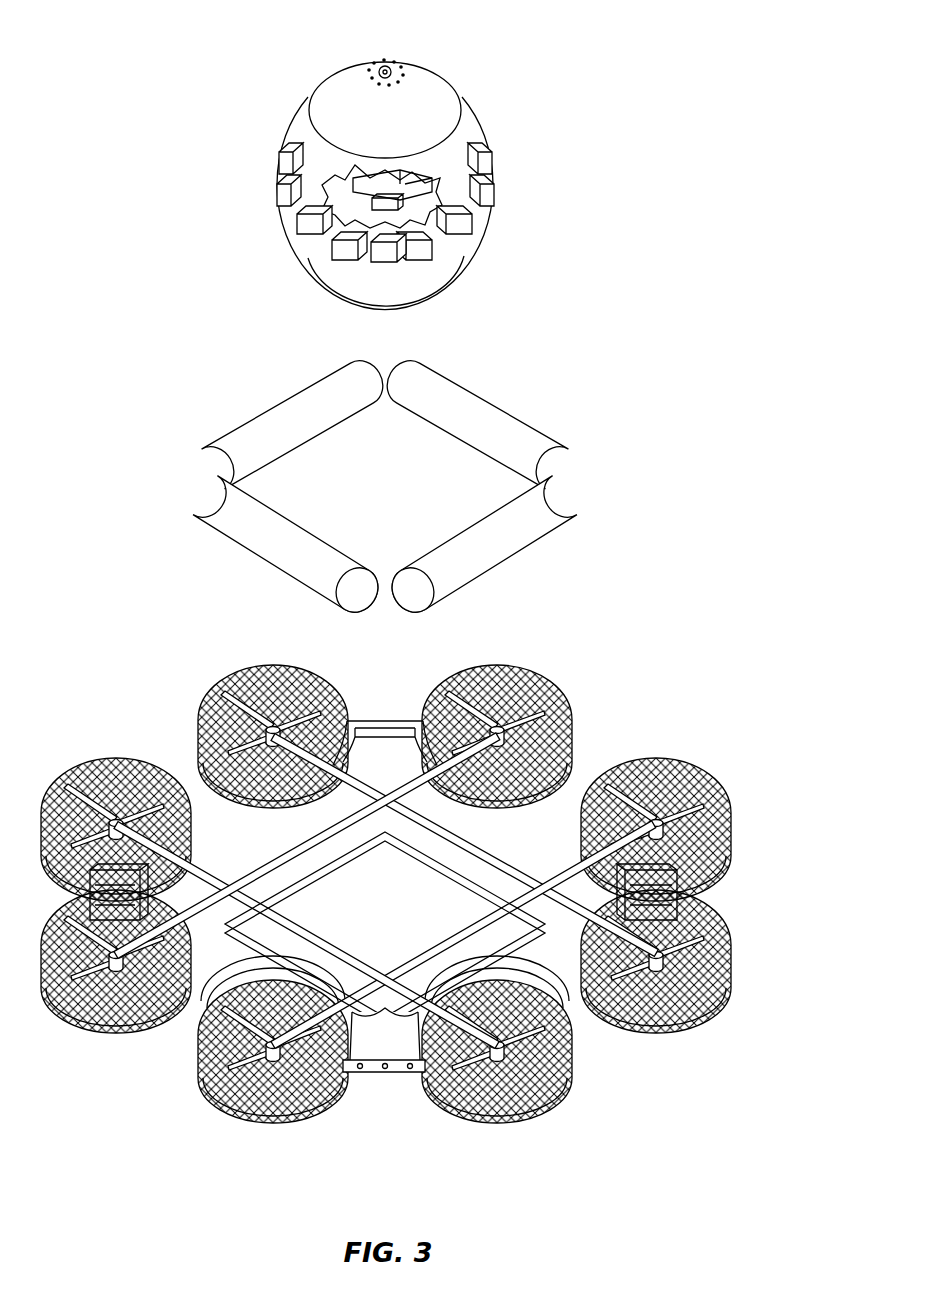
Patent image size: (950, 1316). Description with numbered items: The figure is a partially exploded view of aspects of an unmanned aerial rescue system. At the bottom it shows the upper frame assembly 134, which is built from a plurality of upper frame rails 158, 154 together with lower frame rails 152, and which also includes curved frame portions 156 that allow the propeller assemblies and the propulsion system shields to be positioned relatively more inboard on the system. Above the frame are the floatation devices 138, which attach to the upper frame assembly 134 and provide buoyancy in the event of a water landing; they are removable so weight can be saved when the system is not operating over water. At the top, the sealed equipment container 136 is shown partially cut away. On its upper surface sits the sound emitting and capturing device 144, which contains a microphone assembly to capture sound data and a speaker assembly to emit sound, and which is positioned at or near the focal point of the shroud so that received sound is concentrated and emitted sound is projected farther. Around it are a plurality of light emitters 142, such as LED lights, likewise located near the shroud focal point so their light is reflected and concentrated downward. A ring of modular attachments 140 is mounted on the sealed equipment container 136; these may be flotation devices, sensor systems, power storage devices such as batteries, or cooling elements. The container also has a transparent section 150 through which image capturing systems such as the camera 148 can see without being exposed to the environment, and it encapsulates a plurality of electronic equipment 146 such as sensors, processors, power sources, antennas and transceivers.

The upper frame assembly 134 is at (383, 716).
The sealed equipment container 136 is at (450, 97).
The floatation devices 138 is at (537, 548).
The modular attachments 140 is at (492, 165).
The light emitters 142 is at (410, 73).
The sound emitting and capturing device 144 is at (386, 66).
The electronic equipment 146 is at (445, 214).
The camera 148 is at (402, 222).
The transparent section 150 is at (362, 297).
The lower frame rails 152 is at (482, 895).
The upper frame rails 154 is at (416, 962).
The curved frame portions 156 is at (268, 808).
The upper frame rails 158 is at (300, 916).